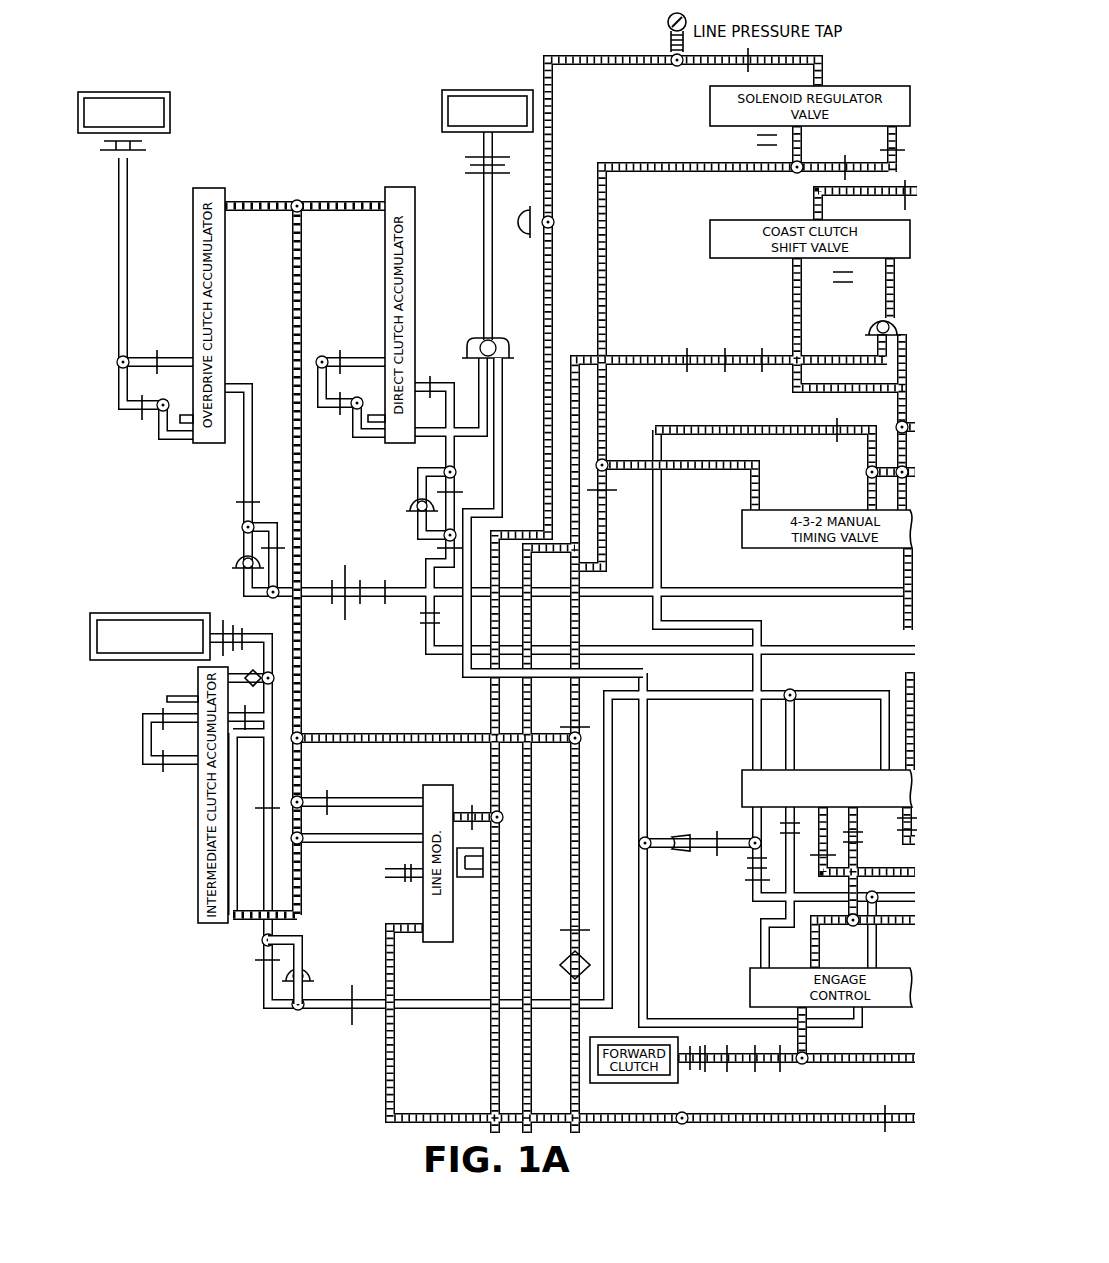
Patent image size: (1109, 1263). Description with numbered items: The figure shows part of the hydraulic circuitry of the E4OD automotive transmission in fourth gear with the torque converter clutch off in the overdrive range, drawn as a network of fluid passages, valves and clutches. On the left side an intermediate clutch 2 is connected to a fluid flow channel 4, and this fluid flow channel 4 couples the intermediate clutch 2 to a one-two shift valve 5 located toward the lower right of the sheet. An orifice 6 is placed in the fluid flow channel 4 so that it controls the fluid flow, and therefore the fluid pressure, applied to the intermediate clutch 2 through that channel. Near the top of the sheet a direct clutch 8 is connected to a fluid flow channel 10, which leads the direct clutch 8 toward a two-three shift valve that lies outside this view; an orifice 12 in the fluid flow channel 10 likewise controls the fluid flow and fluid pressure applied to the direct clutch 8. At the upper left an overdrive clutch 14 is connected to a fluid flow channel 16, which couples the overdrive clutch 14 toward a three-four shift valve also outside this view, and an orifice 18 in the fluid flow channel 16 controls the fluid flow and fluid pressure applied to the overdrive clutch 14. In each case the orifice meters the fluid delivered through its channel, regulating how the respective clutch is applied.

The overdrive clutch 14 is at (172, 104).
The direct clutch 8 is at (440, 107).
The intermediate clutch 2 is at (143, 613).
The fluid flow channel 4 is at (265, 997).
The 1-2 shift valve 5 is at (742, 787).
The orifice 6 is at (352, 1022).
The fluid flow channel 10 is at (462, 500).
The orifice 12 is at (437, 548).
The fluid flow channel 16 is at (314, 588).
The orifice 18 is at (346, 614).